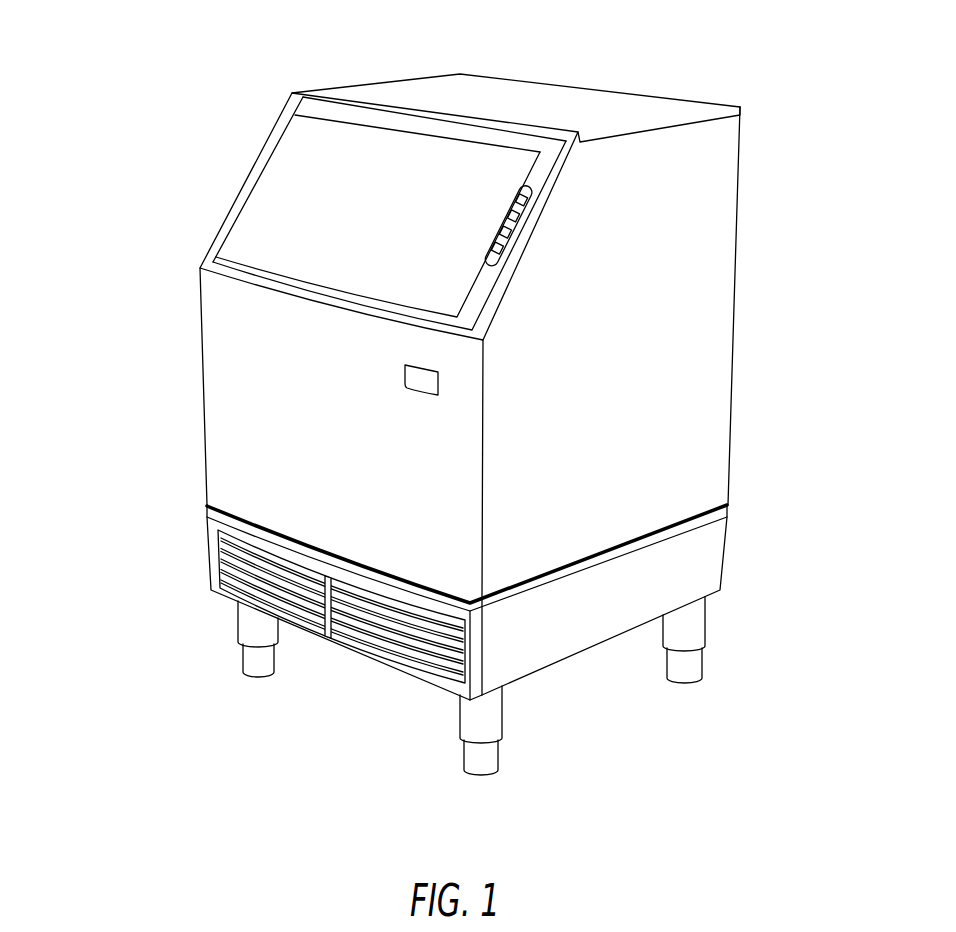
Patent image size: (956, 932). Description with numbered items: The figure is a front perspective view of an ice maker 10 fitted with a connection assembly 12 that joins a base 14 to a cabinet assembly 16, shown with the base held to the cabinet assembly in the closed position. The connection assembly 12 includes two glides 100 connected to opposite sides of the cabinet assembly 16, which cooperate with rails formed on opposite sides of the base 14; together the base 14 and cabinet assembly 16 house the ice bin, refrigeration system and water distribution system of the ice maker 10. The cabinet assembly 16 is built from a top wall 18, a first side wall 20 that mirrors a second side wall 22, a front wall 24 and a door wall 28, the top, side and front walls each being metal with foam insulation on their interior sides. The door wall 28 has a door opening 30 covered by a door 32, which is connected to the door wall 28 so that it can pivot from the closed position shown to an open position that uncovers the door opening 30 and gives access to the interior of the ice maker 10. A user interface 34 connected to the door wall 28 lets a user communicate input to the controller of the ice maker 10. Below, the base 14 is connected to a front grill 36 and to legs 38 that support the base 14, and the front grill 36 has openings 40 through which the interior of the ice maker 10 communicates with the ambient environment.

The ice maker 10 is at (155, 112).
The connection assembly 12 is at (692, 528).
The base 14 is at (607, 610).
The cabinet assembly 16 is at (702, 363).
The top wall 18 is at (575, 93).
The first side wall 20 is at (708, 218).
The second side wall 22 is at (210, 262).
The front wall 24 is at (242, 415).
The door wall 28 is at (261, 143).
The door opening 30 is at (447, 140).
The door 32 is at (316, 138).
The user interface 34 is at (528, 192).
The front grill 36 is at (215, 573).
The legs 38 is at (485, 757).
The openings 40 is at (263, 598).
The glides 100 is at (630, 547).